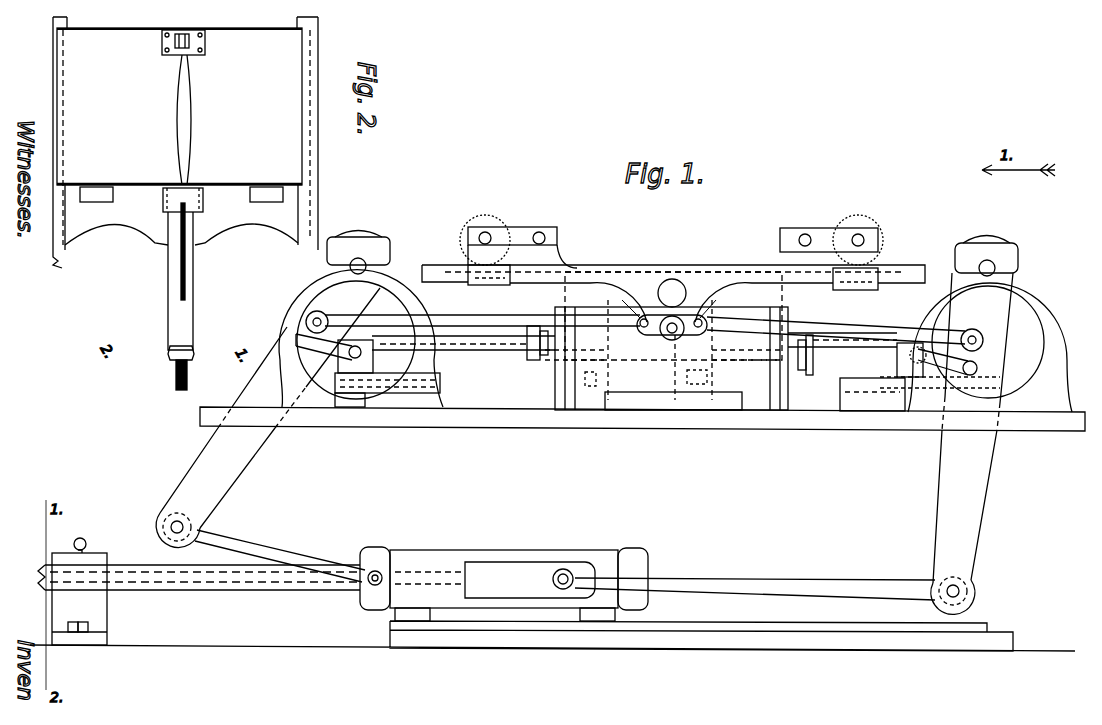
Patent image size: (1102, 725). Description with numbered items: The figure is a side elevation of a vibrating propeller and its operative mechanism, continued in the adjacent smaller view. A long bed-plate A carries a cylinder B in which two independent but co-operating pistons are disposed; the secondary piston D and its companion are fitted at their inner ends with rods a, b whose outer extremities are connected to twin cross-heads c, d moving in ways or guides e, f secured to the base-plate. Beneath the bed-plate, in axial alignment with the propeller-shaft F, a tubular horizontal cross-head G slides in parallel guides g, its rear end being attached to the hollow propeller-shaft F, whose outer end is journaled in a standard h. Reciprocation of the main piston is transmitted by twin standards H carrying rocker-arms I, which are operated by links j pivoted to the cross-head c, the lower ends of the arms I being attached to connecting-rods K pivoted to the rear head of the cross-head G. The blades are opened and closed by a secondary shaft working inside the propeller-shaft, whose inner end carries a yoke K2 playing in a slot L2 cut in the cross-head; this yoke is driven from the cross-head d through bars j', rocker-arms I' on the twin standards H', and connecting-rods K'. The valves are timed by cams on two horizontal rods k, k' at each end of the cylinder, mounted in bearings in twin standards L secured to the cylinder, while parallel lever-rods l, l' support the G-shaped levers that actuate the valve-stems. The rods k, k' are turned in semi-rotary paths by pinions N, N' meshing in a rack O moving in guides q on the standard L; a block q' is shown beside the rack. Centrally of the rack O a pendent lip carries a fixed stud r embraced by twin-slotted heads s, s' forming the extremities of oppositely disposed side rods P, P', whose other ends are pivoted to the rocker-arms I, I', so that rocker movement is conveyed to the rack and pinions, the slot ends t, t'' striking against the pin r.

In FIG. 1, the bed-plate A is at (642, 431).
In FIG. 1, the cylinder B is at (666, 355).
In FIG. 1, the steam port C' is at (588, 379).
In FIG. 1, the secondary piston D is at (697, 377).
In FIG. 1, the propeller-shaft F is at (199, 590).
In FIG. 1, the tubular horizontal cross-head G is at (504, 584).
In FIG. 2, the twin standards H is at (189, 207).
In FIG. 1, the twin standards H is at (361, 319).
In FIG. 1, the twin standards H' is at (998, 324).
In FIG. 1, the rocker-arms I is at (268, 417).
In FIG. 1, the rocker-arms I' is at (972, 443).
In FIG. 1, the connecting-rods K is at (280, 551).
In FIG. 1, the connecting-rods K' is at (755, 576).
In FIG. 1, the yoke K2 is at (567, 570).
In FIG. 1, the twin standards L is at (694, 307).
In FIG. 1, the slot L2 is at (500, 562).
In FIG. 1, the pinion N is at (474, 230).
In FIG. 1, the pinion N' is at (858, 220).
In FIG. 1, the rack O is at (432, 285).
In FIG. 1, the side rod P is at (473, 323).
In FIG. 1, the side rod P' is at (845, 332).
In FIG. 1, the rod a is at (463, 343).
In FIG. 1, the rod b is at (842, 354).
In FIG. 1, the cross-head c is at (355, 357).
In FIG. 1, the cross-head d is at (909, 361).
In FIG. 1, the guide e is at (410, 390).
In FIG. 1, the guide f is at (920, 394).
In FIG. 1, the guides g is at (552, 636).
In FIG. 2, the standard h is at (178, 385).
In FIG. 1, the standard h is at (79, 591).
In FIG. 1, the links j is at (299, 365).
In FIG. 1, the bars j' is at (952, 354).
In FIG. 1, the horizontal rod k is at (522, 230).
In FIG. 1, the horizontal rod k' is at (836, 223).
In FIG. 1, the lever-rod l is at (544, 219).
In FIG. 1, the lever-rod l' is at (805, 221).
In FIG. 1, the guides q is at (486, 290).
In FIG. 1, the block q' is at (848, 292).
In FIG. 1, the fixed stud r is at (670, 334).
In FIG. 1, the slotted head s is at (634, 341).
In FIG. 1, the slotted head s' is at (704, 341).
In FIG. 1, the slot end t is at (623, 300).
In FIG. 1, the arm t'' is at (715, 299).